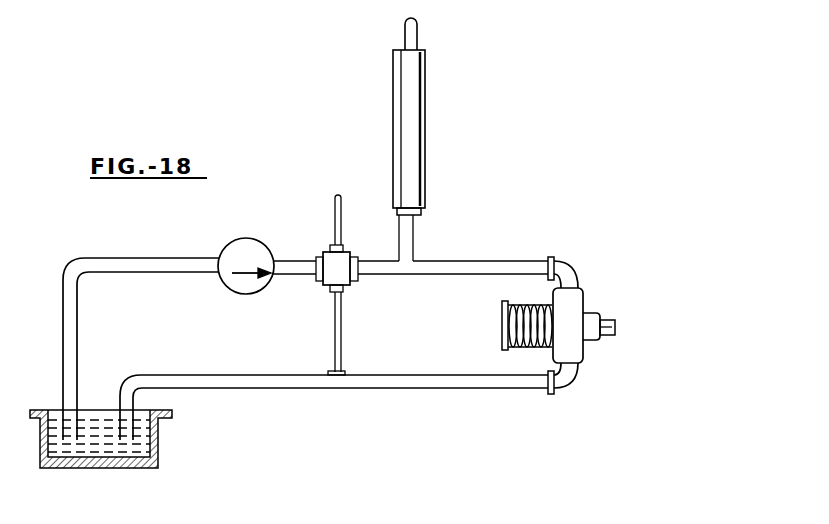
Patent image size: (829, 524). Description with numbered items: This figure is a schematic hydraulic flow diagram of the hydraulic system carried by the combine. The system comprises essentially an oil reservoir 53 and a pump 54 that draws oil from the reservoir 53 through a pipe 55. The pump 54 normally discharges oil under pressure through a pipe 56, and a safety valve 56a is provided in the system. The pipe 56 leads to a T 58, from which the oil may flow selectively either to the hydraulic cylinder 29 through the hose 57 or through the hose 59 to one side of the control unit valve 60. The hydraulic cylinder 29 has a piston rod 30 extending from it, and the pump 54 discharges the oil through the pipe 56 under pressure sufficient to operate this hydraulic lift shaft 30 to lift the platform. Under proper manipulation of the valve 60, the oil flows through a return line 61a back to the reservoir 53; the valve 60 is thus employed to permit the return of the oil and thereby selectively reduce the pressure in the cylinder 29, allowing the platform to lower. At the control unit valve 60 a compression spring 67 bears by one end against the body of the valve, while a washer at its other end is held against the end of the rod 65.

The hydraulic cylinder 29 is at (403, 157).
The piston rod 30 is at (405, 33).
The oil reservoir 53 is at (90, 424).
The pump 54 is at (258, 283).
The pipe 55 is at (167, 262).
The pipe 56 is at (297, 262).
The safety valve 56a is at (346, 285).
The hose 57 is at (399, 243).
The T 58 is at (406, 267).
The hose 59 is at (476, 270).
The control unit valve 60 is at (576, 318).
The return line 61a is at (426, 382).
The rod 65 is at (614, 329).
The compression spring 67 is at (522, 304).